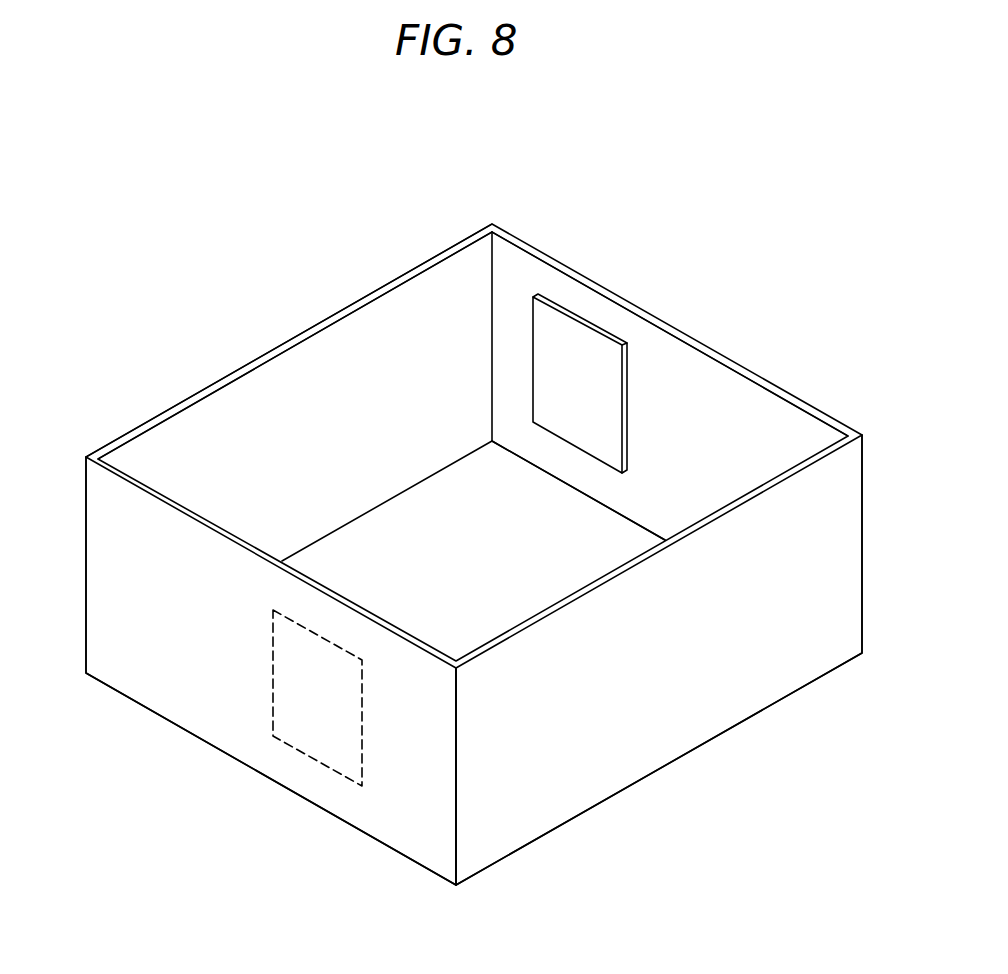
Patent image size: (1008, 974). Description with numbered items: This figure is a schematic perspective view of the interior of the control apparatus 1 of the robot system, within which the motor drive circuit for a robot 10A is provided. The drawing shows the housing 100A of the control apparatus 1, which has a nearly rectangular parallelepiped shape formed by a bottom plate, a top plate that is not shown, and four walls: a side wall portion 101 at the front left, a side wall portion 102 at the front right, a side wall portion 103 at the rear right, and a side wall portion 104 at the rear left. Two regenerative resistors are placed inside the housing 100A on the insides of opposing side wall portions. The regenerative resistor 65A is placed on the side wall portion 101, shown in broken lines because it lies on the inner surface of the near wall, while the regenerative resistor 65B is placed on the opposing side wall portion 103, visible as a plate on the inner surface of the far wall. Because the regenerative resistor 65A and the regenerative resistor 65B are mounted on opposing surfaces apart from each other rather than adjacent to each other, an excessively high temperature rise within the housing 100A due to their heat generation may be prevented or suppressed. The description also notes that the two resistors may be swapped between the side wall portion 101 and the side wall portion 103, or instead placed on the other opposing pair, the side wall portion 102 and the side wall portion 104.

The housing 100A is at (543, 154).
The control apparatus 1 is at (650, 707).
The motor drive circuit for a robot 10A is at (518, 567).
The side wall portion 101 is at (202, 670).
The side wall portion 102 is at (632, 572).
The side wall portion 103 is at (673, 393).
The side wall portion 104 is at (300, 335).
The regenerative resistor 65A is at (315, 697).
The regenerative resistor 65B is at (568, 378).